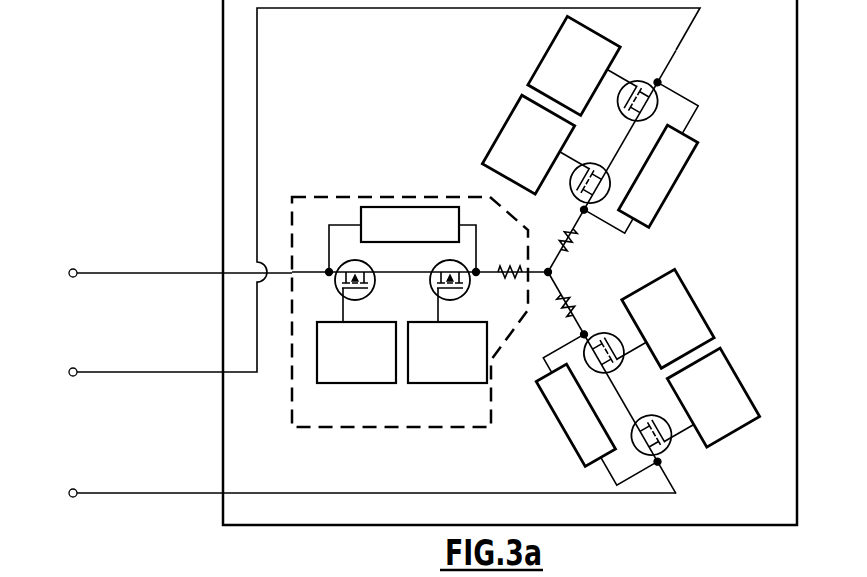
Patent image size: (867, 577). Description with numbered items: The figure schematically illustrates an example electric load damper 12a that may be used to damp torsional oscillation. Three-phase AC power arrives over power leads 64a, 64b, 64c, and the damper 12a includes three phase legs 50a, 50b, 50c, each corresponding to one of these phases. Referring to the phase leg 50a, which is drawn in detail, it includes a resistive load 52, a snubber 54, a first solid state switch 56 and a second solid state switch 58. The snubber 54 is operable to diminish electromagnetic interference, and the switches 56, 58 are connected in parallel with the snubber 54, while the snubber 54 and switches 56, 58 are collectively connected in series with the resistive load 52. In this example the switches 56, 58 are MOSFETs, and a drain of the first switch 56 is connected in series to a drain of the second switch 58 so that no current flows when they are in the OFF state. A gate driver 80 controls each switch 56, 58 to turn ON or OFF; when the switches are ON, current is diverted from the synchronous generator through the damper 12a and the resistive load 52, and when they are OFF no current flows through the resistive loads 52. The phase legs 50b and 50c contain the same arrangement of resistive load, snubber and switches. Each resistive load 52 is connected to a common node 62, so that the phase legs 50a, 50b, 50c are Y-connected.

The damper 12a is at (152, 50).
The phase leg 50a is at (323, 196).
The phase leg 50b is at (700, 200).
The phase leg 50c is at (718, 292).
The resistive load 52 is at (510, 280).
The snubber 54 is at (402, 207).
The first solid state switch 56 is at (340, 285).
The second solid state switch 58 is at (434, 285).
The common node 62 is at (552, 273).
The power lead 64a is at (73, 277).
The power lead 64b is at (73, 376).
The power lead 64c is at (73, 497).
The gate driver 80 is at (343, 384).